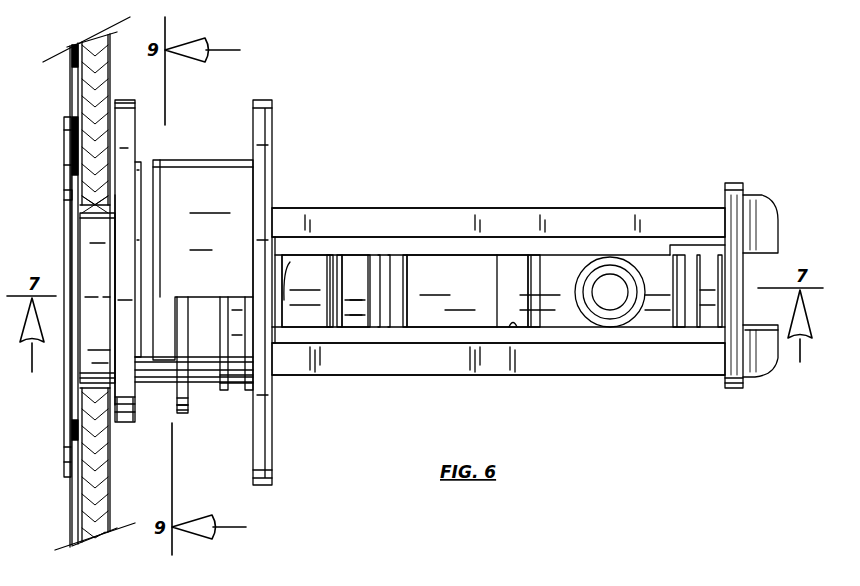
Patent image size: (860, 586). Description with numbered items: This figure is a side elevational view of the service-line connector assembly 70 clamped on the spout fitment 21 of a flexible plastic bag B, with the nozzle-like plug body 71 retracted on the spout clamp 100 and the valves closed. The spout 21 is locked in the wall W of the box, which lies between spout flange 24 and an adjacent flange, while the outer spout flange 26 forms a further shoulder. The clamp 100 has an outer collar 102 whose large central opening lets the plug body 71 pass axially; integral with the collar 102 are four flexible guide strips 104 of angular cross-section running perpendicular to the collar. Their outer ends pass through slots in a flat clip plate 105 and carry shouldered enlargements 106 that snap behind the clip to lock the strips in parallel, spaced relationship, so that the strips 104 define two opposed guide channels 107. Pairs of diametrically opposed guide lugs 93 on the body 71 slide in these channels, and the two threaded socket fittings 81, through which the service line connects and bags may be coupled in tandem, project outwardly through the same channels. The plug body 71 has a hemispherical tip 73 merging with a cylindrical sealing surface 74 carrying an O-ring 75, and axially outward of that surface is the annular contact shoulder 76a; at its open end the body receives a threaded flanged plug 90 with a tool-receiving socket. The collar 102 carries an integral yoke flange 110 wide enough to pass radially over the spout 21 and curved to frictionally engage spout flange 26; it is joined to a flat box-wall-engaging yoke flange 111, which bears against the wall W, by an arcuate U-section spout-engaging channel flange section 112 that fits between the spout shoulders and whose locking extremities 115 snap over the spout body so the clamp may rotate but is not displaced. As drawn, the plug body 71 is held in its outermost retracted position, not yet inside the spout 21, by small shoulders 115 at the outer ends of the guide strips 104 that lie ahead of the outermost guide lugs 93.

The wall W is at (74, 80).
The flexible plastic bag B is at (72, 100).
The spout fitment 21 is at (98, 289).
The spout flange 24 is at (64, 197).
The spout flange 26 is at (190, 414).
The service-line connector assembly 70 is at (499, 200).
The plug body 71 is at (447, 306).
The tip 73 is at (312, 272).
The cylindrical sealing surface 74 is at (358, 318).
The O-ring 75 is at (340, 320).
The annular contact shoulder 76a is at (386, 256).
The threaded socket fittings 81 is at (605, 270).
The flanged plug 90 is at (710, 280).
The guide lugs 93 is at (538, 255).
The spout clamp 100 is at (179, 180).
The collar 102 is at (273, 472).
The guide strips 104 is at (340, 218).
The clip plate 105 is at (736, 193).
The shouldered enlargements 106 is at (762, 356).
The guide channels 107 is at (515, 328).
The yoke flange 110 is at (204, 241).
The box wall engaging flange 111 is at (121, 115).
The spout-engaging channel flange section 112 is at (150, 385).
The locking extremities 115 is at (668, 252).